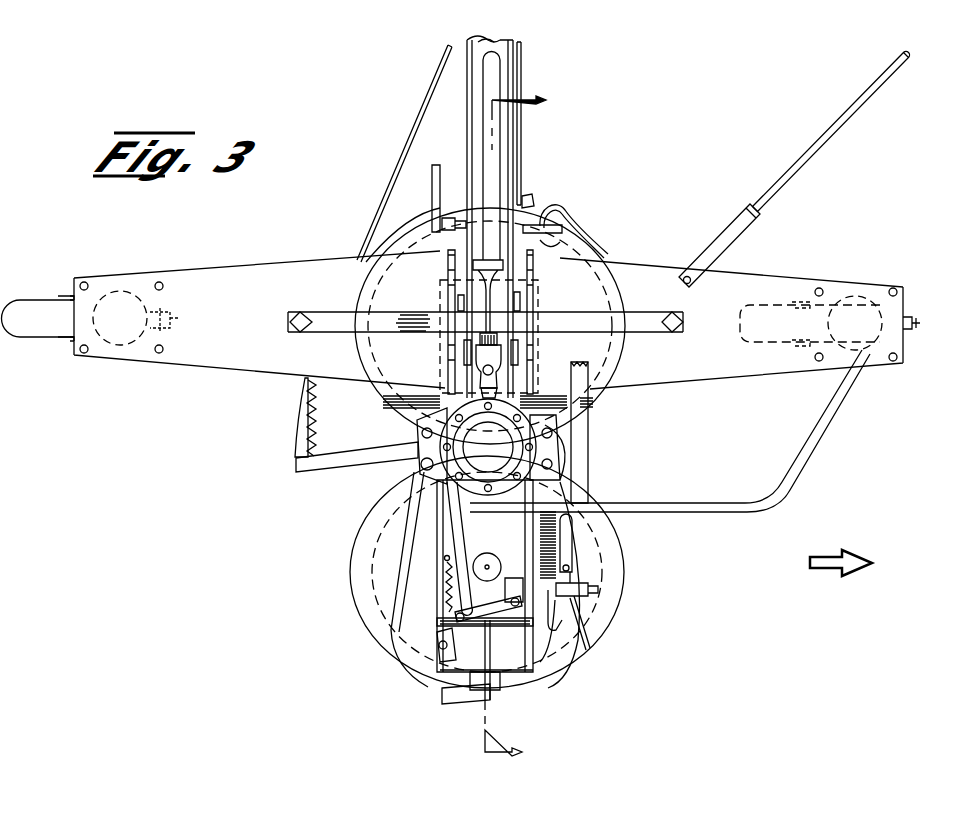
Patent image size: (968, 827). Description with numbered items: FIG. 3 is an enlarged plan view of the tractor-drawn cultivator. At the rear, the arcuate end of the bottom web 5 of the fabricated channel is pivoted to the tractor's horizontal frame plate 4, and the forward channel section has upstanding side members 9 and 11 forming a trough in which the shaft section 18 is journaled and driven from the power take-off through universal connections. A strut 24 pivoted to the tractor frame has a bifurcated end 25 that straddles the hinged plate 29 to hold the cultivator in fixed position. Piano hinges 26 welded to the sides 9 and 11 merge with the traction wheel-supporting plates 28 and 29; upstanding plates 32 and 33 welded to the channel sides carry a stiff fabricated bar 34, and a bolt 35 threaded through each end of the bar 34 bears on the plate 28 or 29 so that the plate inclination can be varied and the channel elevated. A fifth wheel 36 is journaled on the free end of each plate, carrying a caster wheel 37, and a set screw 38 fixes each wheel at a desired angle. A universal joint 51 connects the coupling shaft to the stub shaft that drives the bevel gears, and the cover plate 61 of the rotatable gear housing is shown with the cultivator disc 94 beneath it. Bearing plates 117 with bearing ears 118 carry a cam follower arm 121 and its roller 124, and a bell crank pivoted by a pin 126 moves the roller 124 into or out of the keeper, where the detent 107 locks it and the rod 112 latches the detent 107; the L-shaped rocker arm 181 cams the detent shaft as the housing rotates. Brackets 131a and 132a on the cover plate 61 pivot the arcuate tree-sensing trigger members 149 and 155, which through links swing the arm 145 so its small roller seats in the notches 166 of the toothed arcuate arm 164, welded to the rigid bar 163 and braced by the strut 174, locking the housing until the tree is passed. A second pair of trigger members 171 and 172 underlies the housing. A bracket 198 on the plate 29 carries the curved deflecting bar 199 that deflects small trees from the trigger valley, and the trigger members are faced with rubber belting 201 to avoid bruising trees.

The frame plate 4 is at (521, 429).
The bottom web 5 is at (500, 42).
The side member 9 is at (467, 96).
The side member 11 is at (514, 64).
The shaft section 18 is at (488, 160).
The strut 24 is at (830, 140).
The bifurcated end 25 is at (738, 240).
The piano hinges 26 is at (448, 276).
The traction wheel-supporting plate 28 is at (252, 335).
The traction wheel-supporting plate 29 is at (725, 354).
The upstanding plate 32 is at (458, 305).
The upstanding plate 33 is at (522, 303).
The fabricated bar 34 is at (428, 333).
The bolt 35 is at (304, 319).
The fifth wheel 36 is at (150, 330).
The caster wheel 37 is at (42, 306).
The set screw 38 is at (182, 301).
The universal joint 51 is at (476, 370).
The cover plate 61 is at (503, 533).
The cultivator disc 94 is at (512, 680).
The detent 107 is at (578, 224).
The rod 112 is at (522, 146).
The bearing plate 117 is at (553, 630).
The bearing ear 118 is at (501, 571).
The cam follower arm 121 is at (492, 630).
The roller 124 is at (446, 656).
The pin 126 is at (570, 578).
The bracket 131a is at (558, 462).
The bracket 132a is at (417, 428).
The arm 145 is at (500, 612).
The tree-sensing trigger member 149 is at (590, 247).
The tree-sensing trigger member 155 is at (360, 610).
The rigid bar 163 is at (356, 465).
The arcuate arm 164 is at (298, 430).
The notches 166 is at (316, 388).
The tree-sensing trigger member 171 is at (416, 222).
The tree-sensing trigger member 172 is at (614, 622).
The strut 174 is at (408, 132).
The rocker arm 181 is at (474, 704).
The bracket 198 is at (589, 425).
The deflecting bar 199 is at (812, 444).
The belting 201 is at (352, 560).